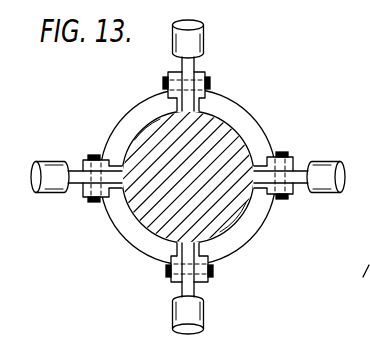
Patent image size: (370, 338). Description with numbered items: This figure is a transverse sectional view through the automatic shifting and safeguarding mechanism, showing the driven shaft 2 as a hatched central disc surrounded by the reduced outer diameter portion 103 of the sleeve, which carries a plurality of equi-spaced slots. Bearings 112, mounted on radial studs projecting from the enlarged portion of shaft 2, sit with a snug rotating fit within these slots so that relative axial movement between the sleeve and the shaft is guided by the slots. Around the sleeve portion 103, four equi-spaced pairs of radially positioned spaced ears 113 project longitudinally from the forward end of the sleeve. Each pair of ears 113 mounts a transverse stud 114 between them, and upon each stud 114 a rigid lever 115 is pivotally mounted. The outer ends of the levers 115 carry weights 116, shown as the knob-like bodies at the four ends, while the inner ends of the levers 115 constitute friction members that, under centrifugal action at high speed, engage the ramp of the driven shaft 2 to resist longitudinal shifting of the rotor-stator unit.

The driven shaft 2 is at (230, 143).
The portion of sleeve 103 is at (128, 113).
The bearings 112 is at (213, 104).
The ears 113 is at (166, 80).
The transverse studs 114 is at (210, 83).
The rigid levers 115 is at (182, 66).
The weights 116 is at (211, 31).